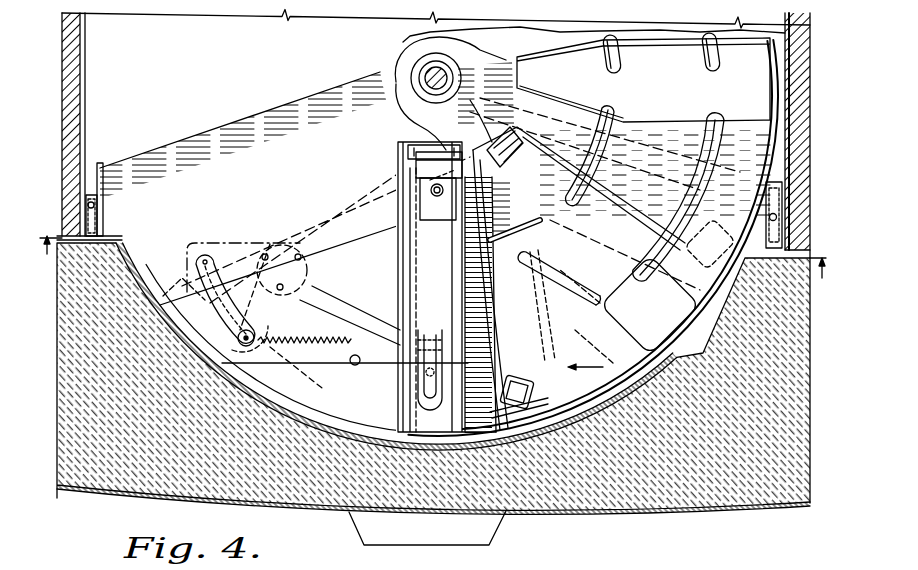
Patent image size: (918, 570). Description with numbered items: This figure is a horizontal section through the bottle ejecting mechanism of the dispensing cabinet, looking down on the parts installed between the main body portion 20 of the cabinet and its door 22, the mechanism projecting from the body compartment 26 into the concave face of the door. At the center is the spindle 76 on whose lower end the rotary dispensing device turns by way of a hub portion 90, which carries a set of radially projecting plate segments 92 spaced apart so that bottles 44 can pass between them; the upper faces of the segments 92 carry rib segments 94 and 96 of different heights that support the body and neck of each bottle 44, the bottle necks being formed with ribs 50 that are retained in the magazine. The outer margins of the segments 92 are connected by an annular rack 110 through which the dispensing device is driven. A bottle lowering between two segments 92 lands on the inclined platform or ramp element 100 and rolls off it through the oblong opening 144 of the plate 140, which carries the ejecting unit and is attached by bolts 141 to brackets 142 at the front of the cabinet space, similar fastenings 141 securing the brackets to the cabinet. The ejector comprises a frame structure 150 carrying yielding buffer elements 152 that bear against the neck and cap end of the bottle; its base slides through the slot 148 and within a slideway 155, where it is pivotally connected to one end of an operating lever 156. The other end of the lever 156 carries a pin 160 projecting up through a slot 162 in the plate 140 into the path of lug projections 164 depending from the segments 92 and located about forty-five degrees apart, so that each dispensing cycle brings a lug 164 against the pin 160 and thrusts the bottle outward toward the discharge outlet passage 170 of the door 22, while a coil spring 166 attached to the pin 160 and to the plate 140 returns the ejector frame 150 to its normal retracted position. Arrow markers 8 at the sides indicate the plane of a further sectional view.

The section line 8- 8 is at (433, 313).
The main body portion 20 is at (811, 52).
The door 22 is at (756, 510).
The body compartment 26 is at (155, 39).
The bottles 44 is at (372, 557).
The ribs 50 is at (510, 160).
The spindle 76 is at (446, 72).
The hub portion 90 is at (418, 62).
The plate segments 92 is at (687, 47).
The rib segments 94 is at (713, 120).
The rib segments 96 is at (610, 112).
The inclined platform or ramp element 100 is at (592, 284).
The annular rack 110 is at (770, 97).
The plate 140 is at (225, 116).
The bolts 141 is at (104, 210).
The brackets 142 is at (100, 162).
The oblong opening 144 is at (392, 420).
The slot 148 is at (418, 258).
The frame structure 150 is at (424, 145).
The yielding buffer elements 152 is at (416, 162).
The slideway 155 is at (422, 287).
The operating lever 156 is at (236, 308).
The pin 160 is at (256, 336).
The slot 162 is at (188, 324).
The lug projections 164 is at (152, 301).
The coil spring 166 is at (324, 364).
The discharge outlet passage 170 is at (505, 537).